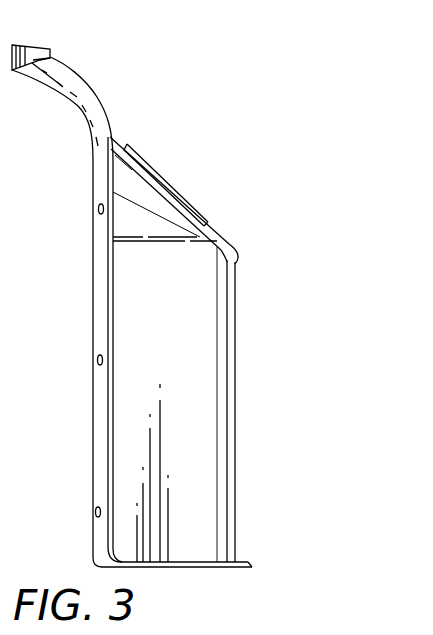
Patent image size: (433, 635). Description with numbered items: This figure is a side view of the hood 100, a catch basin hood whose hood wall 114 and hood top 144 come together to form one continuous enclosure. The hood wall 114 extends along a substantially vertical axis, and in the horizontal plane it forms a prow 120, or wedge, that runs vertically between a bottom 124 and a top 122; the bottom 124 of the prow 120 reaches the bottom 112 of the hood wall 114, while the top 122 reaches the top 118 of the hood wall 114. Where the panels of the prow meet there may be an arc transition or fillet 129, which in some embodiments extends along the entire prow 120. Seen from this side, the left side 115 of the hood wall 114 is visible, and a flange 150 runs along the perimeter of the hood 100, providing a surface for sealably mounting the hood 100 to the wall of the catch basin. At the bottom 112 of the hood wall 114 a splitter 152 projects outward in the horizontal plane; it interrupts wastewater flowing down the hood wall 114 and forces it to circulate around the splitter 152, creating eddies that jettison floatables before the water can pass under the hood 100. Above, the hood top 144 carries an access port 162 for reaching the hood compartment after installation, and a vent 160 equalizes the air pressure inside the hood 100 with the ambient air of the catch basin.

The hood 100 is at (128, 96).
The bottom of the hood wall 112 is at (176, 568).
The hood wall 114 is at (193, 397).
The left side of the hood wall 115 is at (122, 452).
The top of the hood wall 118 is at (172, 238).
The prow 120 is at (262, 293).
The top of the prow 122 is at (229, 247).
The fillet 129 is at (229, 254).
The bottom of the prow 124 is at (243, 557).
The hood top 144 is at (128, 205).
The flange 150 is at (100, 292).
The splitter 152 is at (247, 567).
The vent 160 is at (50, 47).
The access port 162 is at (173, 186).